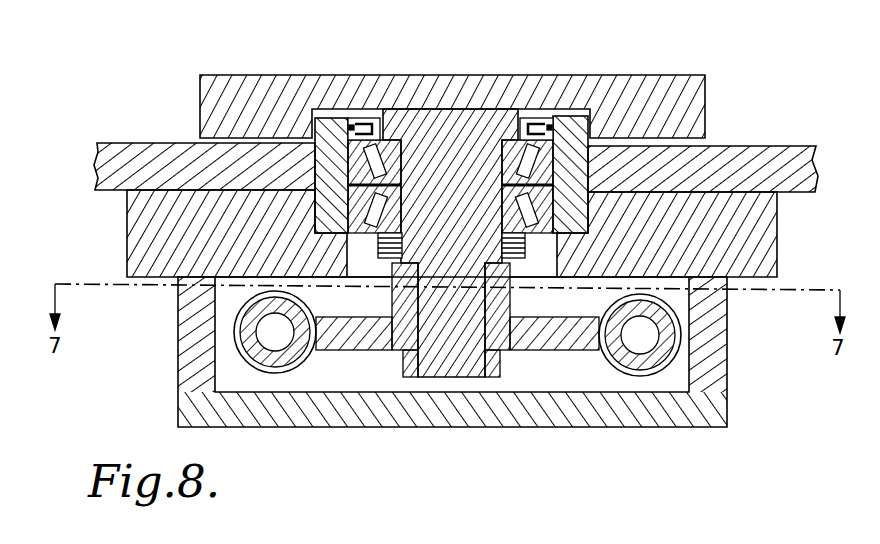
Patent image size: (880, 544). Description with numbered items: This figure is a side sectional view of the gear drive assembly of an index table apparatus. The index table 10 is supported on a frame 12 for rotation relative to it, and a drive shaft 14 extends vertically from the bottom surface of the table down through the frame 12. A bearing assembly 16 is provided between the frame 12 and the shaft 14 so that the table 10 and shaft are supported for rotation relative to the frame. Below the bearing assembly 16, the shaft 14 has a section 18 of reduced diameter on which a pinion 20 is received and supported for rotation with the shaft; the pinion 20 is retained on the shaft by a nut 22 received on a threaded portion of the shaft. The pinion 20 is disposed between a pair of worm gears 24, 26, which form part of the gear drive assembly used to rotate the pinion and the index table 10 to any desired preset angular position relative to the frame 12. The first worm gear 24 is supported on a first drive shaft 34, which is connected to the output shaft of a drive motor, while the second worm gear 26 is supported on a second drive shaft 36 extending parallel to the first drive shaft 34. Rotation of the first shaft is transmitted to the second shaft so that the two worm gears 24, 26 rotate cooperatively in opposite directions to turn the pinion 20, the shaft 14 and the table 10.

The index table 10 is at (315, 82).
The frame 12 is at (727, 157).
The drive shaft 14 is at (452, 127).
The bearing assembly 16 is at (410, 150).
The section of reduced diameter 18 is at (403, 363).
The pinion 20 is at (562, 348).
The nut 22 is at (505, 360).
The worm gear 24 is at (626, 344).
The worm gear 26 is at (281, 339).
The first drive shaft 34 is at (633, 328).
The second drive shaft 36 is at (280, 330).